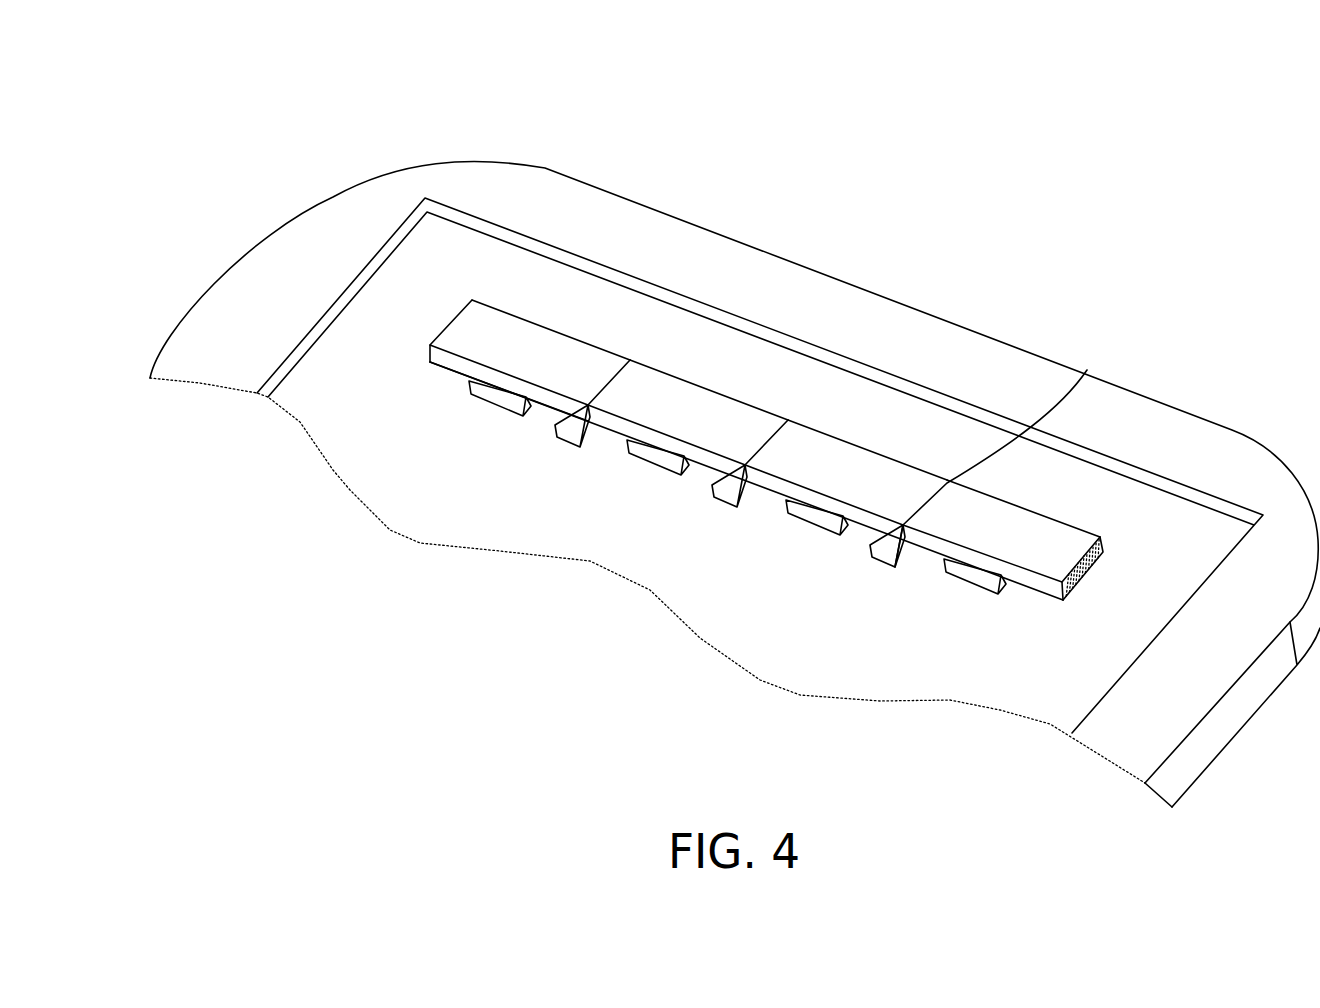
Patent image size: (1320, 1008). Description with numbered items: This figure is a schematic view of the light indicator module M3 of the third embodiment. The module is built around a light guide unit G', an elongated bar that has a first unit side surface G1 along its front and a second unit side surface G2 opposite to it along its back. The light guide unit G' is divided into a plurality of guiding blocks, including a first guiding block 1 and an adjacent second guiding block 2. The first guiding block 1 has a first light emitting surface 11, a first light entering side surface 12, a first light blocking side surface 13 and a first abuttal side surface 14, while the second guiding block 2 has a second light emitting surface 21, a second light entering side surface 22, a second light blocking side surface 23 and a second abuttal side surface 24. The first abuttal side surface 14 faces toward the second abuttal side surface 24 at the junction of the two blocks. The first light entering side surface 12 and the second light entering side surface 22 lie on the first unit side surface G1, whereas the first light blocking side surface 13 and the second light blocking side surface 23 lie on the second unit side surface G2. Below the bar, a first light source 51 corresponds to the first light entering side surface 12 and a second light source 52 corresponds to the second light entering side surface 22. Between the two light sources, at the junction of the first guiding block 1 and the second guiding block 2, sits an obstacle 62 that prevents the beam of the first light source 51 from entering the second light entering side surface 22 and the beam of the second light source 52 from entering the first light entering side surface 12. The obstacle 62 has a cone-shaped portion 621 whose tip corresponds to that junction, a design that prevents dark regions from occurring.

The light indicator module M3 is at (155, 87).
The first guiding block 1 is at (1214, 343).
The first light emitting surface 11 is at (1040, 583).
The first light entering side surface 12 is at (1060, 540).
The first light blocking side surface 13 is at (1023, 540).
The first abuttal side surface 14 is at (1012, 505).
The second guiding block 2 is at (1016, 277).
The second light emitting surface 21 is at (838, 470).
The second light entering side surface 22 is at (773, 482).
The second light blocking side surface 23 is at (893, 455).
The second abuttal side surface 24 is at (923, 493).
The first light source 51 is at (975, 573).
The second light source 52 is at (815, 511).
The obstacle 62 is at (888, 547).
The cone-shaped portion 621 is at (905, 541).
The first unit side surface G1 is at (445, 358).
The second unit side surface G2 is at (488, 305).
The light guide unit G' is at (417, 330).